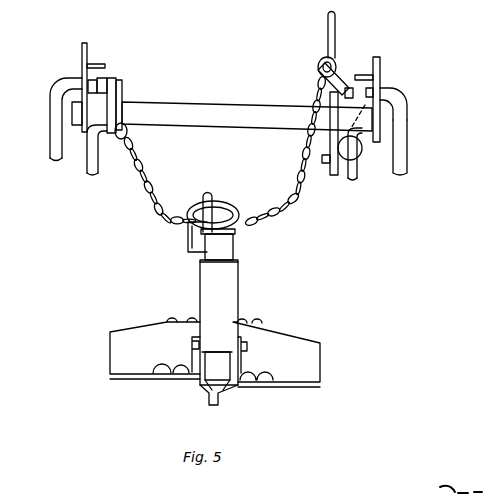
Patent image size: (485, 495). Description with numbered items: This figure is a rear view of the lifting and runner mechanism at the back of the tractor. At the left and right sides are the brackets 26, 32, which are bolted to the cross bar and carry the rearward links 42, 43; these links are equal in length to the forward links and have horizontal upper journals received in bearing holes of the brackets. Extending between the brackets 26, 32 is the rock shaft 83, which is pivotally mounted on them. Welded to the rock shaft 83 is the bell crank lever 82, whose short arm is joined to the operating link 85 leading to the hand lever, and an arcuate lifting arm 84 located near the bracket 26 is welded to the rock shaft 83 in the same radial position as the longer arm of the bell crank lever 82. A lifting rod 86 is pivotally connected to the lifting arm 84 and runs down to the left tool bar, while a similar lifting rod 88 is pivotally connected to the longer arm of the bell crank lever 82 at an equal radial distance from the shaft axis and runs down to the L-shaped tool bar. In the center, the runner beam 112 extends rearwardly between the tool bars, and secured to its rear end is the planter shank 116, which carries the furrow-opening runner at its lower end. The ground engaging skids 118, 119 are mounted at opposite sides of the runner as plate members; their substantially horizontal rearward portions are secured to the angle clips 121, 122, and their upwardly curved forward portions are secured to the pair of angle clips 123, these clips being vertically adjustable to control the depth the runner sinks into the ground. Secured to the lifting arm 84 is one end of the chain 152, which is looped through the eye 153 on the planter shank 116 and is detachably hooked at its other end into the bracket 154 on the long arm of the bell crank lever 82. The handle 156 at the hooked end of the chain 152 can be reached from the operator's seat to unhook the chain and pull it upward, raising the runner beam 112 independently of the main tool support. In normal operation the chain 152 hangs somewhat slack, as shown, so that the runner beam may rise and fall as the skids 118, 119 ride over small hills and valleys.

The bracket 26 is at (82, 53).
The bracket 32 is at (380, 80).
The rearward link 42 is at (50, 146).
The rearward link 43 is at (407, 150).
The bell crank lever 82 is at (333, 178).
The rock shaft 83 is at (192, 104).
The lifting arm 84 is at (113, 146).
The operating link 85 is at (407, 108).
The lifting rod 86 is at (88, 170).
The lifting rod 88 is at (357, 177).
The runner beam 112 is at (188, 246).
The planter shank 116 is at (234, 250).
The ground engaging skid 118 is at (110, 356).
The ground engaging skid 119 is at (320, 357).
The angle clip 121 is at (190, 352).
The angle clip 122 is at (243, 352).
The angle clips 123 is at (190, 320).
The chain 152 is at (147, 176).
The eye 153 is at (209, 200).
The bracket 154 is at (333, 80).
The handle 156 is at (336, 18).